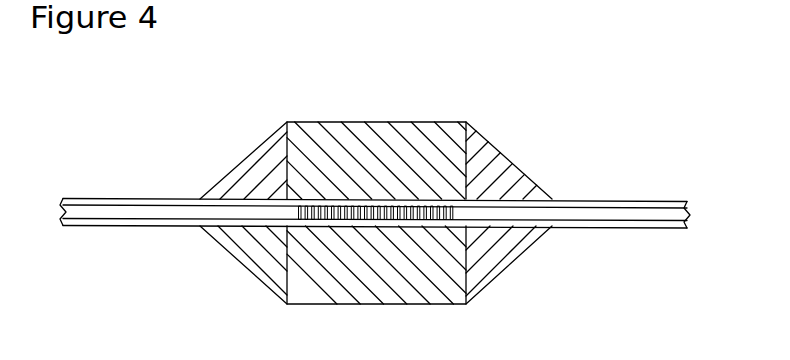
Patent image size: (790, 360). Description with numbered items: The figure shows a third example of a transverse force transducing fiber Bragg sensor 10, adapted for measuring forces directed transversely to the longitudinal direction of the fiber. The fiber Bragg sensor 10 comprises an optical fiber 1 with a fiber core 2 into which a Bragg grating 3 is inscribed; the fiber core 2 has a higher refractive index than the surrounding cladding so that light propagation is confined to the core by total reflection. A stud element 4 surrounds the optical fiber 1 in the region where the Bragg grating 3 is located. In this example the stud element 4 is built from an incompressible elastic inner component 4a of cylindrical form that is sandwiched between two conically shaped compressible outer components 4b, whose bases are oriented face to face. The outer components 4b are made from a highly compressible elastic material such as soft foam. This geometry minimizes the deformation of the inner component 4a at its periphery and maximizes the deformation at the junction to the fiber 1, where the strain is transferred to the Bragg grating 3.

The optical fiber 1 is at (603, 201).
The fiber core 2 is at (676, 215).
The Bragg grating 3 is at (387, 214).
The stud element 4 is at (277, 93).
The inner component 4a is at (362, 128).
The outer component 4b is at (262, 170).
The fiber Bragg sensor 10 is at (529, 94).